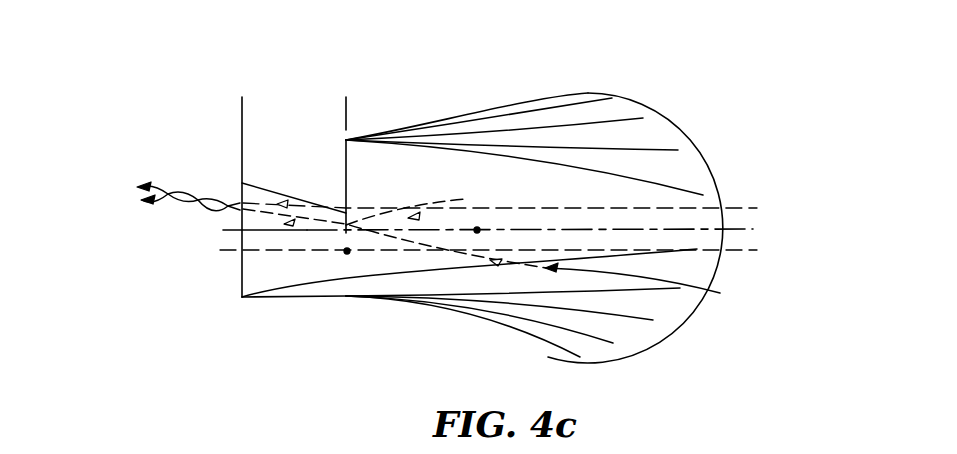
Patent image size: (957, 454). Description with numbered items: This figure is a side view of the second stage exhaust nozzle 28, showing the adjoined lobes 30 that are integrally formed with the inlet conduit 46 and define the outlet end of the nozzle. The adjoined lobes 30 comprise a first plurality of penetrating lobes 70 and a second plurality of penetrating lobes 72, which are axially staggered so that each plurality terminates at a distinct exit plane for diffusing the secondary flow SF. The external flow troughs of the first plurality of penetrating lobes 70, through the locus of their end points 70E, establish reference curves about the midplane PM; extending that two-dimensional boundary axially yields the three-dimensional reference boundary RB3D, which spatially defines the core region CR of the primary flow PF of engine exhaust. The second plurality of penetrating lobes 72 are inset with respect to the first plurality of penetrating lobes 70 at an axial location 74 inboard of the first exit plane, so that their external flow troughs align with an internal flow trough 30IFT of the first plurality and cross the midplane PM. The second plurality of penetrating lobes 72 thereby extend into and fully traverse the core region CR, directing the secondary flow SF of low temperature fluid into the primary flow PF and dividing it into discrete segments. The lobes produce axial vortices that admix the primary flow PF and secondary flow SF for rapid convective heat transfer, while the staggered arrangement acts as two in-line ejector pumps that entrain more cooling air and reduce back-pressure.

The second stage exhaust nozzle 28 is at (677, 83).
The inlet conduit 46 is at (712, 202).
The axial location 74 is at (477, 228).
The second plurality of penetrating lobes 72 is at (272, 228).
The first plurality of penetrating lobes 70 is at (337, 246).
The adjoined lobes 30 is at (367, 353).
The end points 70E is at (349, 252).
The internal flow trough 30IFT is at (419, 267).
The core region CR is at (523, 217).
The primary flow PF is at (460, 203).
The secondary flow SF is at (160, 188).
The midplane PM is at (753, 229).
The three-dimensional reference boundary RB3D is at (744, 250).